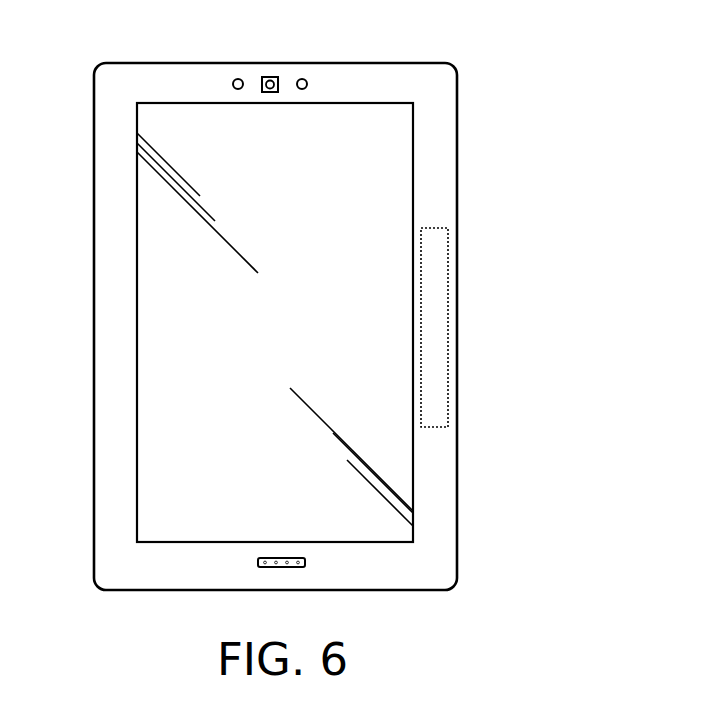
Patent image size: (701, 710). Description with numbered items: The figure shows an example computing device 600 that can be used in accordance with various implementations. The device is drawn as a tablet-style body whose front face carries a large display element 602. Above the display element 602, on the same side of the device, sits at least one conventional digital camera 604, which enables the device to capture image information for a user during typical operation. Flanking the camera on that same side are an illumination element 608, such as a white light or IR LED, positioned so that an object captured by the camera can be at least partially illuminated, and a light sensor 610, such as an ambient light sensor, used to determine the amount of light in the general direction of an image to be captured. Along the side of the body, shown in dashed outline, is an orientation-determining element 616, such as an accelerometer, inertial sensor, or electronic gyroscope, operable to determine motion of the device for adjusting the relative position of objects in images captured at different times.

The computing device 600 is at (613, 120).
The display element 602 is at (135, 113).
The digital camera 604 is at (268, 76).
The illumination element 608 is at (306, 79).
The light sensor 610 is at (233, 80).
The orientation-determining element 616 is at (448, 295).